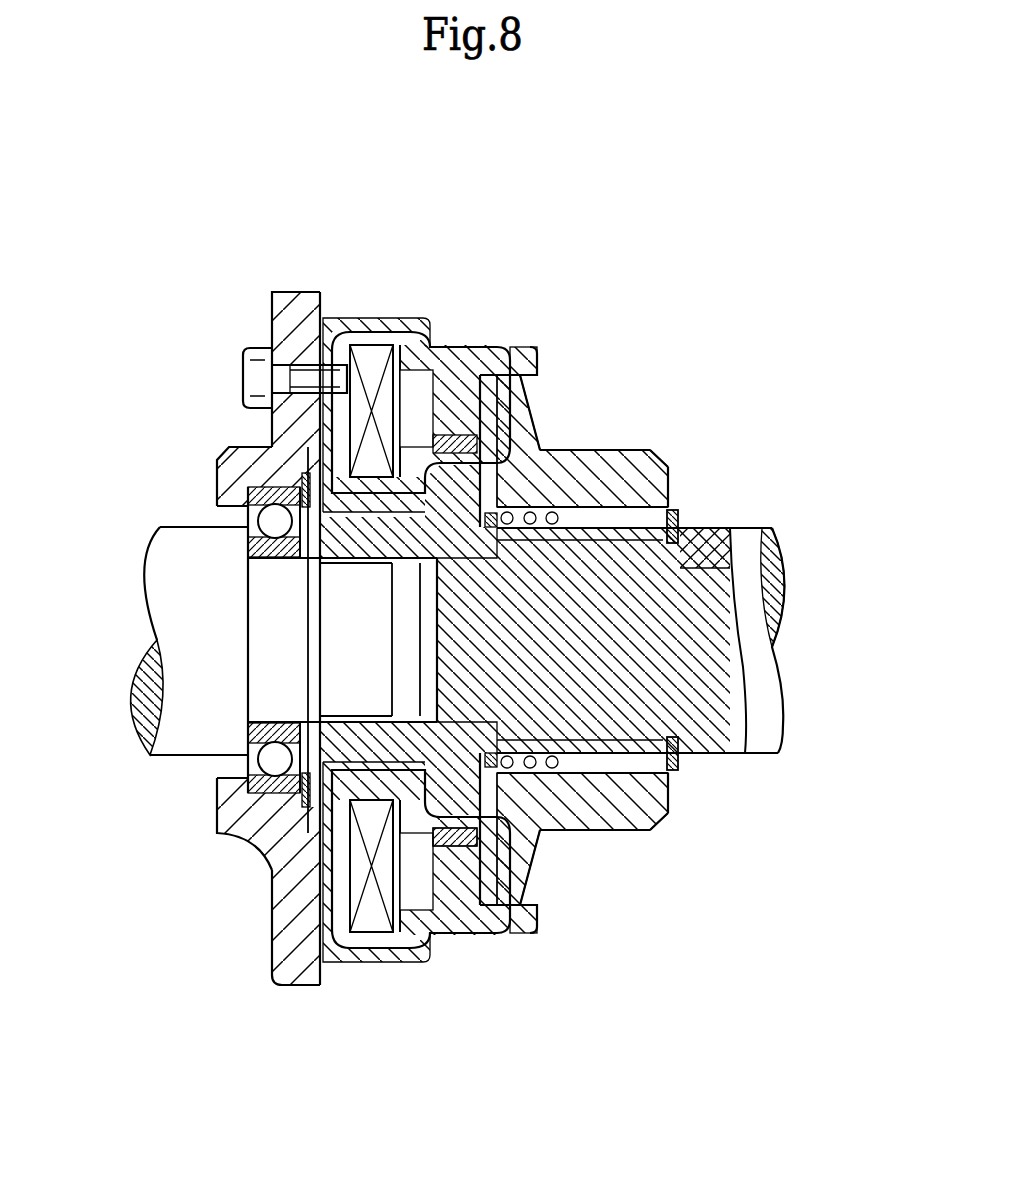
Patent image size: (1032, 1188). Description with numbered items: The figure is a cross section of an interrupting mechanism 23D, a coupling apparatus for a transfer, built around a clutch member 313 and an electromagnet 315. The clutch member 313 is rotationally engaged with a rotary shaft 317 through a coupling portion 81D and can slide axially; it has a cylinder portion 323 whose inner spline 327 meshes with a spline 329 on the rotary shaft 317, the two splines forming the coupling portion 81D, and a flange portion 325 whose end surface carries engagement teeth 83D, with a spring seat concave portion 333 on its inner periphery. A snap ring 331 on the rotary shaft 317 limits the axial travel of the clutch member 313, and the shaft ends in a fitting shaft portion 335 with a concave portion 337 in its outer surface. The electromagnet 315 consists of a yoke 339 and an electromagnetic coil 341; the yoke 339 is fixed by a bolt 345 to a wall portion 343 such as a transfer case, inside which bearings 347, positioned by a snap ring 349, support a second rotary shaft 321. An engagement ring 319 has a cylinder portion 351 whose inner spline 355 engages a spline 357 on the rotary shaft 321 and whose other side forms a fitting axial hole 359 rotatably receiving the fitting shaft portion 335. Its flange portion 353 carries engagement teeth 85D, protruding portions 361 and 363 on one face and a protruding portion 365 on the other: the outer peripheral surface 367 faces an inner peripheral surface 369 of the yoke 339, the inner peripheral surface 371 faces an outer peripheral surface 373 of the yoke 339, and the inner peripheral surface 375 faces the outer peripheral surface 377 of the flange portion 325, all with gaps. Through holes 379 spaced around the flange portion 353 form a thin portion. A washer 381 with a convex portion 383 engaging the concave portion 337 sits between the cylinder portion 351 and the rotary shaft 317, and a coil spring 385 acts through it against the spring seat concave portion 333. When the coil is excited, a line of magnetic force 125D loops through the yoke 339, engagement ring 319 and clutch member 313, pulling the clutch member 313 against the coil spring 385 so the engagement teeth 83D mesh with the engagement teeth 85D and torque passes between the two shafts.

The interrupting mechanism 23D is at (593, 178).
The line of magnetic force 125D is at (483, 345).
The clutch member 313 is at (575, 452).
The electromagnet 315 is at (330, 300).
The rotary shaft 317 is at (740, 563).
The engagement ring 319 is at (463, 335).
The rotary shaft 321 is at (155, 528).
The cylinder portion 323 is at (610, 447).
The flange portion 325 is at (503, 433).
The inner spline 327 is at (742, 525).
The spline 329 is at (668, 525).
The snap ring 331 is at (677, 776).
The spring seat concave portion 333 is at (622, 580).
The fitting shaft portion 335 is at (498, 745).
The concave portion 337 is at (470, 573).
The yoke 339 is at (340, 312).
The electromagnetic coil 341 is at (370, 352).
The wall portion 343 is at (297, 293).
The bolt 345 is at (250, 410).
The bearings 347 is at (247, 487).
The snap ring 349 is at (300, 472).
The cylinder portion 351 is at (433, 523).
The flange portion 353 is at (484, 372).
The inner spline 355 is at (365, 586).
The spline 357 is at (365, 580).
The fitting axial hole 359 is at (460, 575).
The protruding portion 361 is at (270, 346).
The protruding portion 363 is at (312, 462).
The protruding portion 365 is at (500, 400).
The outer peripheral surface 367 is at (405, 345).
The inner peripheral surface 369 is at (430, 345).
The inner peripheral surface 371 is at (355, 612).
The outer peripheral surface 373 is at (407, 607).
The inner peripheral surface 375 is at (502, 420).
The outer peripheral surface 377 is at (503, 345).
The through holes 379 is at (465, 848).
The washer 381 is at (635, 612).
The convex portion 383 is at (740, 680).
The coil spring 385 is at (642, 601).
The coupling portion 81D is at (676, 508).
The engagement teeth 83D is at (505, 447).
The engagement teeth 85D is at (500, 421).